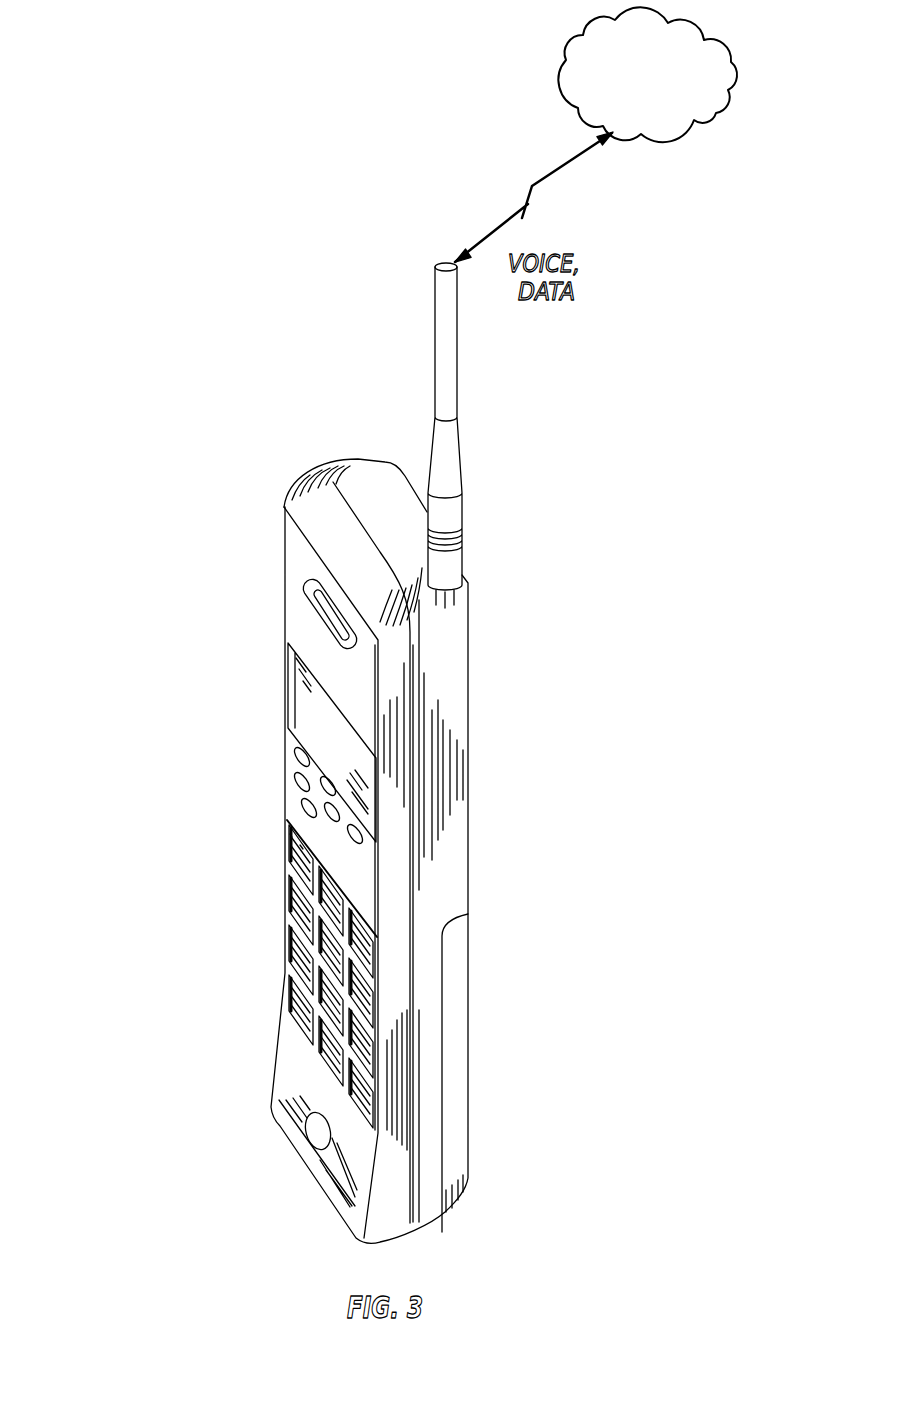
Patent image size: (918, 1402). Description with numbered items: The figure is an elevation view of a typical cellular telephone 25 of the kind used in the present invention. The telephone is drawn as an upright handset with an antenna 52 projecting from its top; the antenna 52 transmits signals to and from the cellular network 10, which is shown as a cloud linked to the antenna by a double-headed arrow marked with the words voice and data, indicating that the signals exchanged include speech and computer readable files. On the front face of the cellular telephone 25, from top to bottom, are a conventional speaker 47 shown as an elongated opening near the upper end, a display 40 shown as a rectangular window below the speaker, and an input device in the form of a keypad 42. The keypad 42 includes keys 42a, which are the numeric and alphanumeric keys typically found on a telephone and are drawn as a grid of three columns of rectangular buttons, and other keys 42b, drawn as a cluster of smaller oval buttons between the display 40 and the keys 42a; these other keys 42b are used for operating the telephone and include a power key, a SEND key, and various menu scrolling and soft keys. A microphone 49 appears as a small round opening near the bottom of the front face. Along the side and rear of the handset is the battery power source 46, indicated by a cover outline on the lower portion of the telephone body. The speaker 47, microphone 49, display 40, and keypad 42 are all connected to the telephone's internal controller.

The cellular network 10 is at (718, 114).
The cellular telephone 25 is at (503, 675).
The display 40 is at (315, 722).
The keypad 42 is at (373, 990).
The keys 42a is at (287, 980).
The other keys 42b is at (338, 800).
The battery power source 46 is at (457, 1092).
The speaker 47 is at (320, 607).
The microphone 49 is at (312, 1133).
The antenna 52 is at (443, 402).